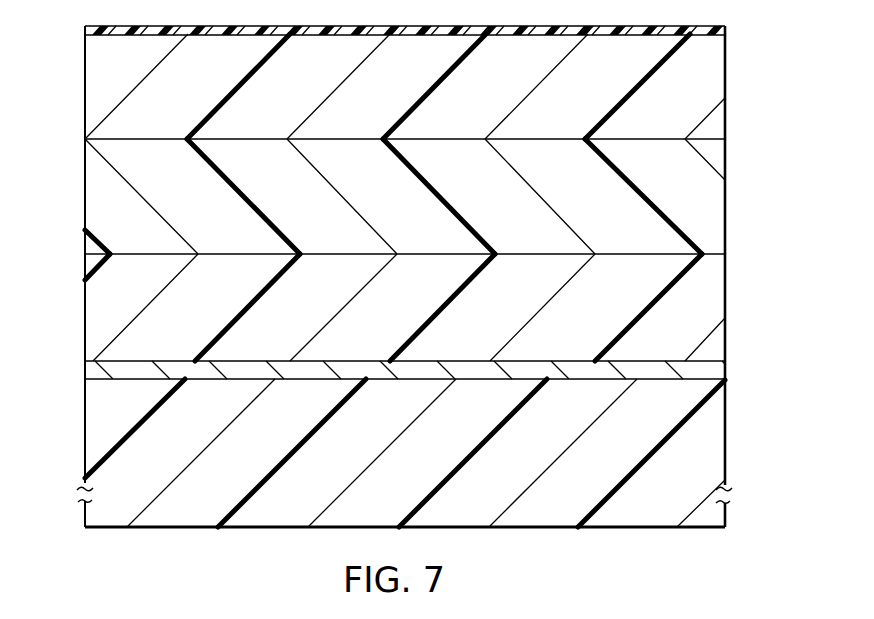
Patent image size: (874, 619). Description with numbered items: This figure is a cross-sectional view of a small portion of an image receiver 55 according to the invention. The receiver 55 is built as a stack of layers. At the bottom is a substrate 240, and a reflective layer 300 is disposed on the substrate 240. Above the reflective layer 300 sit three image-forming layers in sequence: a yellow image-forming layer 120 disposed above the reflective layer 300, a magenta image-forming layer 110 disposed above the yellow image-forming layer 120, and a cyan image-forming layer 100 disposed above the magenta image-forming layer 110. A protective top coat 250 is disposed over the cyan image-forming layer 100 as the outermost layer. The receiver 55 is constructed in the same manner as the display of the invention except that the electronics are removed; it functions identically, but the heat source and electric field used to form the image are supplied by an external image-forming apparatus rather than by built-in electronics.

The receiver 55 is at (752, 103).
The protective top coat 250 is at (85, 32).
The cyan image-forming layer 100 is at (93, 100).
The magenta image-forming layer 110 is at (93, 181).
The yellow image-forming layer 120 is at (100, 294).
The reflective layer 300 is at (95, 370).
The substrate 240 is at (100, 435).